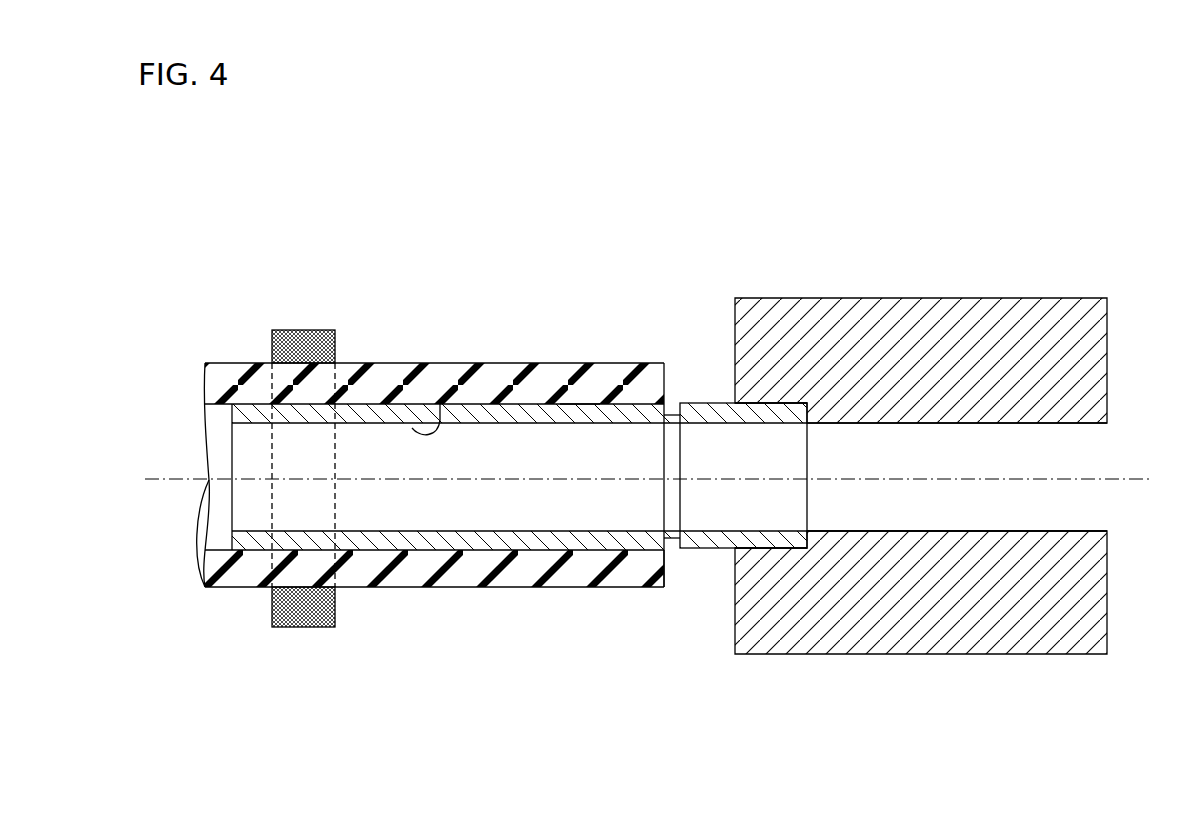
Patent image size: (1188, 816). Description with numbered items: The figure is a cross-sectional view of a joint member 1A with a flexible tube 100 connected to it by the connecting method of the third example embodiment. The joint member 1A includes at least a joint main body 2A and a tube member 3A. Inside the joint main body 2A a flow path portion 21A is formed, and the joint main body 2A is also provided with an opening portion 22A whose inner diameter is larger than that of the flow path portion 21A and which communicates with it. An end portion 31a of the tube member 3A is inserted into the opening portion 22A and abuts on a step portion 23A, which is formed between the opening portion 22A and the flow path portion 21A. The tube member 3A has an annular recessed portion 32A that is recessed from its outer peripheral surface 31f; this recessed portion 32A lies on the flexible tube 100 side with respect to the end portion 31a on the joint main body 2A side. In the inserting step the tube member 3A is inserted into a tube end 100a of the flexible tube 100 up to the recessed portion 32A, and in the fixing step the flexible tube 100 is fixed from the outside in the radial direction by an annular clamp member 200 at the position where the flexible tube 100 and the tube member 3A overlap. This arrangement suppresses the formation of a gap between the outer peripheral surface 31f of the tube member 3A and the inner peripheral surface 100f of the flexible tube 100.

The flexible tube 100 is at (368, 363).
The inner peripheral surface 100f is at (440, 404).
The tube end 100a is at (664, 587).
The annular clamp member 200 is at (307, 627).
The joint member 1A is at (669, 336).
The tube member 3A is at (538, 404).
The outer peripheral surface 31f is at (585, 404).
The annular recessed portion 32A is at (683, 403).
The end portion 31a is at (797, 403).
The joint main body 2A is at (968, 298).
The step portion 23A is at (795, 395).
The opening portion 22A is at (777, 549).
The flow path portion 21A is at (822, 531).